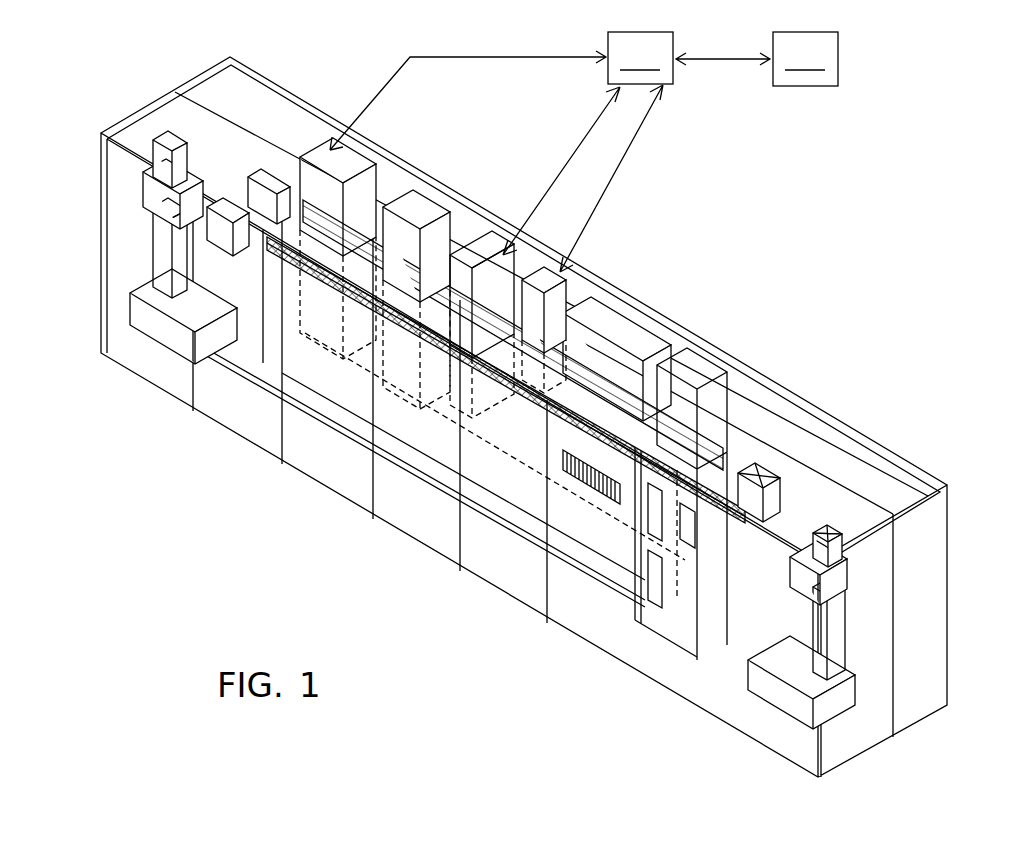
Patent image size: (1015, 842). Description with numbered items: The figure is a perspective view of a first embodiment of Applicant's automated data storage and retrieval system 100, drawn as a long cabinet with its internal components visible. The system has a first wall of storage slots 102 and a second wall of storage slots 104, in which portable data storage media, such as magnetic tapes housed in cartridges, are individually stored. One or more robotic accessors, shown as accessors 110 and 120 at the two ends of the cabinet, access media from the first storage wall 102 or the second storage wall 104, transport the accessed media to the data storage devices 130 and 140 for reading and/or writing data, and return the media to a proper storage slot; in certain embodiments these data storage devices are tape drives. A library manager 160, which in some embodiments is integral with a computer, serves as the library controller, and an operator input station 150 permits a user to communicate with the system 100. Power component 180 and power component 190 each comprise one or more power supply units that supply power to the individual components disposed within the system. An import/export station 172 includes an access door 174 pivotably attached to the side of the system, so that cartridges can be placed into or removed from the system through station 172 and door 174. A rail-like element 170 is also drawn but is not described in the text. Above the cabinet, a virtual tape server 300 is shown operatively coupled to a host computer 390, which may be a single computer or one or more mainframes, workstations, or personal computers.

The automated data storage and retrieval system 100 is at (578, 690).
The first wall of storage slots 102 is at (372, 188).
The second wall of storage slots 104 is at (310, 377).
The accessor 110 is at (150, 196).
The accessor 120 is at (848, 588).
The data storage device 130 is at (482, 240).
The data storage device 140 is at (545, 272).
The operator input station 150 is at (440, 205).
The library manager 160 is at (385, 150).
The rail 170 is at (407, 467).
The import/export station 172 is at (698, 640).
The access door 174 is at (668, 605).
The power component 180 is at (752, 470).
The power component 190 is at (742, 517).
The virtual tape server 300 is at (550, 152).
The host computer 390 is at (805, 59).